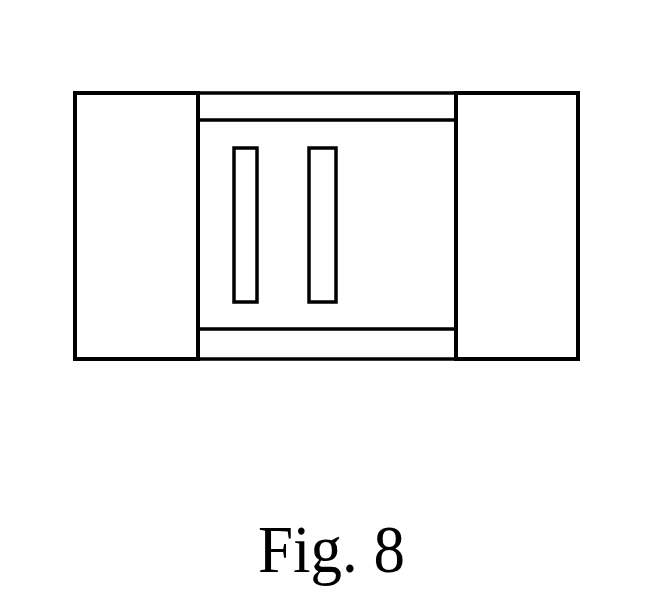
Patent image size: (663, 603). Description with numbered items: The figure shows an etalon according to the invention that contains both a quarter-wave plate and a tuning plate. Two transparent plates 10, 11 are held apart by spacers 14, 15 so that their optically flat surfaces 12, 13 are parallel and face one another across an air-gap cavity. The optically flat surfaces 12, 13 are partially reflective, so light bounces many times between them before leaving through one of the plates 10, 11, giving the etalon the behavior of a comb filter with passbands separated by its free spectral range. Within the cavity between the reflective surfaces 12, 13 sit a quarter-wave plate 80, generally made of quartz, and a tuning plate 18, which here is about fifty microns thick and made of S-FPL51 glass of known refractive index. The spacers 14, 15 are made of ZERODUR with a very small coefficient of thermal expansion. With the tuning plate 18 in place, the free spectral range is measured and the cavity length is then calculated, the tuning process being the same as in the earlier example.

The plate 10 is at (143, 332).
The plate 11 is at (523, 328).
The optically flat surface 12 is at (200, 156).
The optically flat surface 13 is at (455, 179).
The spacer 14 is at (422, 106).
The spacer 15 is at (413, 343).
The tuning plate 18 is at (322, 279).
The quarter-wave plate 80 is at (245, 292).